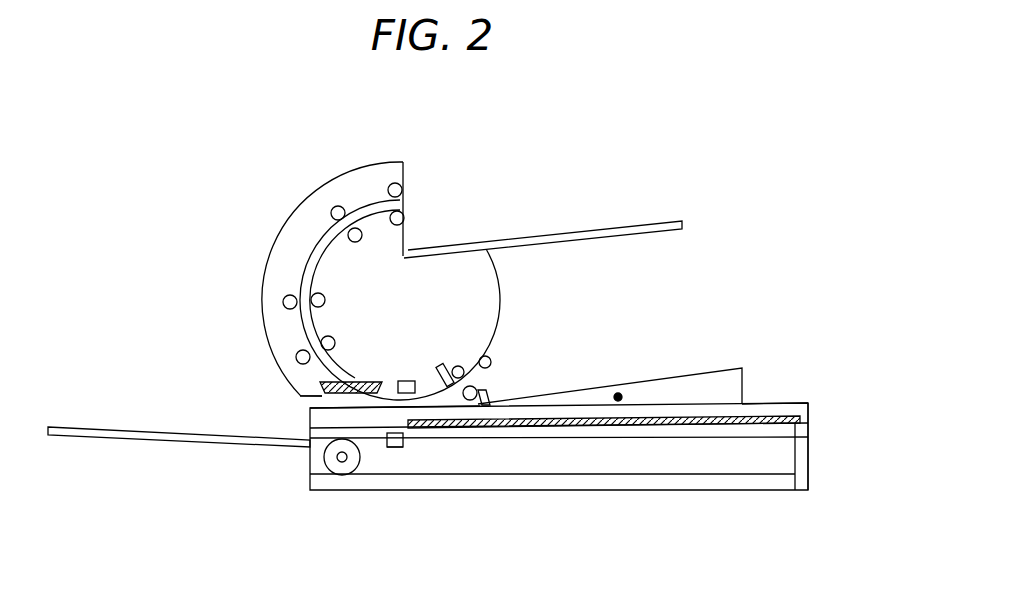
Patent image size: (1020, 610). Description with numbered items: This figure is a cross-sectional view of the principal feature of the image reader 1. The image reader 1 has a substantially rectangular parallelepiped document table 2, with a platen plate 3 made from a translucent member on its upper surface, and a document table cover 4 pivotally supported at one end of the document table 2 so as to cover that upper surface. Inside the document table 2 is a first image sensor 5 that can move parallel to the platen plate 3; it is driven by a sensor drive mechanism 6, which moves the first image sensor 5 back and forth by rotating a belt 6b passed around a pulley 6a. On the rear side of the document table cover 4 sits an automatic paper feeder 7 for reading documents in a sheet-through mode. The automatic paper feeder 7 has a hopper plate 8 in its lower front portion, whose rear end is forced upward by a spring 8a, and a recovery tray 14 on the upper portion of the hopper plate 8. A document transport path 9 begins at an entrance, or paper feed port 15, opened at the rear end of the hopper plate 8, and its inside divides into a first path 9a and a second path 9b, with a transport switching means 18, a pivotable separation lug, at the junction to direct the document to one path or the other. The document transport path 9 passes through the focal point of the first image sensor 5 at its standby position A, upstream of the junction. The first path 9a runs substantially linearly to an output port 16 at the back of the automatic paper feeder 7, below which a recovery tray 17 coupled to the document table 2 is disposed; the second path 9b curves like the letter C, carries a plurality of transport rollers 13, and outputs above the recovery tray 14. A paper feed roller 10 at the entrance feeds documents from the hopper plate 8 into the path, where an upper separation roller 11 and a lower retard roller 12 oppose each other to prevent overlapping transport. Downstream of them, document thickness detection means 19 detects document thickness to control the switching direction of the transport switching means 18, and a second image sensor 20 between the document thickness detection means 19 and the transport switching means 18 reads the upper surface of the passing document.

The image reader 1 is at (768, 283).
The document table 2 is at (743, 488).
The platen plate 3 is at (797, 488).
The document table cover 4 is at (782, 403).
The first image sensor 5 is at (398, 448).
The sensor drive mechanism 6 is at (614, 478).
The pulley 6a is at (338, 468).
The belt 6b is at (565, 478).
The automatic paper feeder 7 is at (302, 167).
The hopper plate 8 is at (723, 368).
The spring 8a is at (618, 397).
The document transport path 9 is at (440, 390).
The first path 9a is at (320, 394).
The second path 9b is at (308, 258).
The paper feed roller 10 is at (490, 357).
The separation roller 11 is at (462, 368).
The retard roller 12 is at (480, 393).
The transport rollers 13 is at (362, 235).
The recovery tray 14 is at (590, 230).
The entrance (paper feed port) 15 is at (472, 380).
The output port 16 is at (310, 403).
The recovery tray 17 is at (147, 438).
The transport switching means 18 is at (337, 388).
The document thickness detection means 19 is at (443, 365).
The second image sensor 20 is at (407, 380).
The standby position A is at (393, 450).